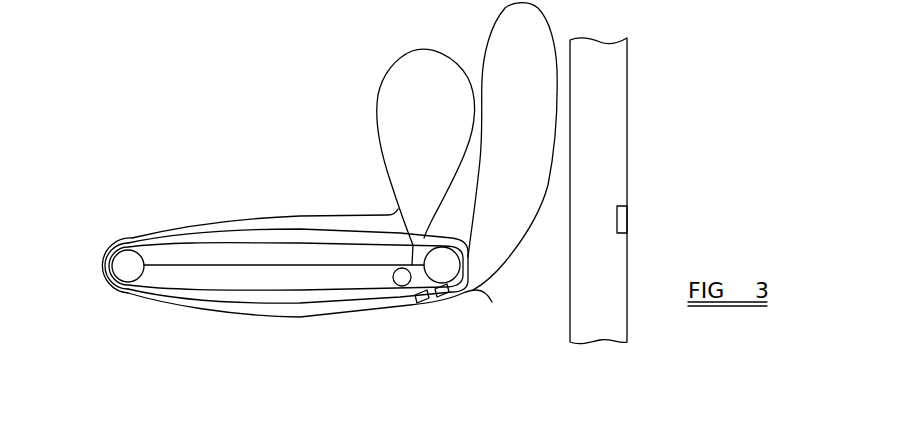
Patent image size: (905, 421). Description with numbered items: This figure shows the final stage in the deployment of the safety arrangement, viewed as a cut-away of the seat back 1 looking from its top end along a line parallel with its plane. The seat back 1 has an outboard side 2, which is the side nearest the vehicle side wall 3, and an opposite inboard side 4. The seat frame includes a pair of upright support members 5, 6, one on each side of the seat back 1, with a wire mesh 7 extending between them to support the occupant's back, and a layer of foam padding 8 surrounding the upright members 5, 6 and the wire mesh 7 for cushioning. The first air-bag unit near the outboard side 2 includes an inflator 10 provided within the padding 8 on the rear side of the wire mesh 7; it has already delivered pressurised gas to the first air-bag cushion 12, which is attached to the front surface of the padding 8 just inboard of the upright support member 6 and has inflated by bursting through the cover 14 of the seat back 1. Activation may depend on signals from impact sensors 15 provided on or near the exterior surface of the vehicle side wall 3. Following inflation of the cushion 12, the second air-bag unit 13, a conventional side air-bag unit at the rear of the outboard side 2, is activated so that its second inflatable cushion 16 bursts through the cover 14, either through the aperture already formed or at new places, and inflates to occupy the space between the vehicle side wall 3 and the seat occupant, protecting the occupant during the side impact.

The seat back 1 is at (92, 306).
The outboard side 2 is at (507, 322).
The vehicle side wall 3 is at (627, 142).
The inboard side 4 is at (106, 232).
The upright support member 5 is at (128, 263).
The upright support member 6 is at (442, 264).
The wire mesh 7 is at (317, 248).
The padding 8 is at (262, 235).
The inflator 10 is at (398, 280).
The air-bag cushion 12 is at (426, 157).
The second air-bag unit 13 is at (430, 302).
The cover 14 is at (230, 316).
The impact sensors 15 is at (644, 218).
The second inflatable cushion 16 is at (512, 146).